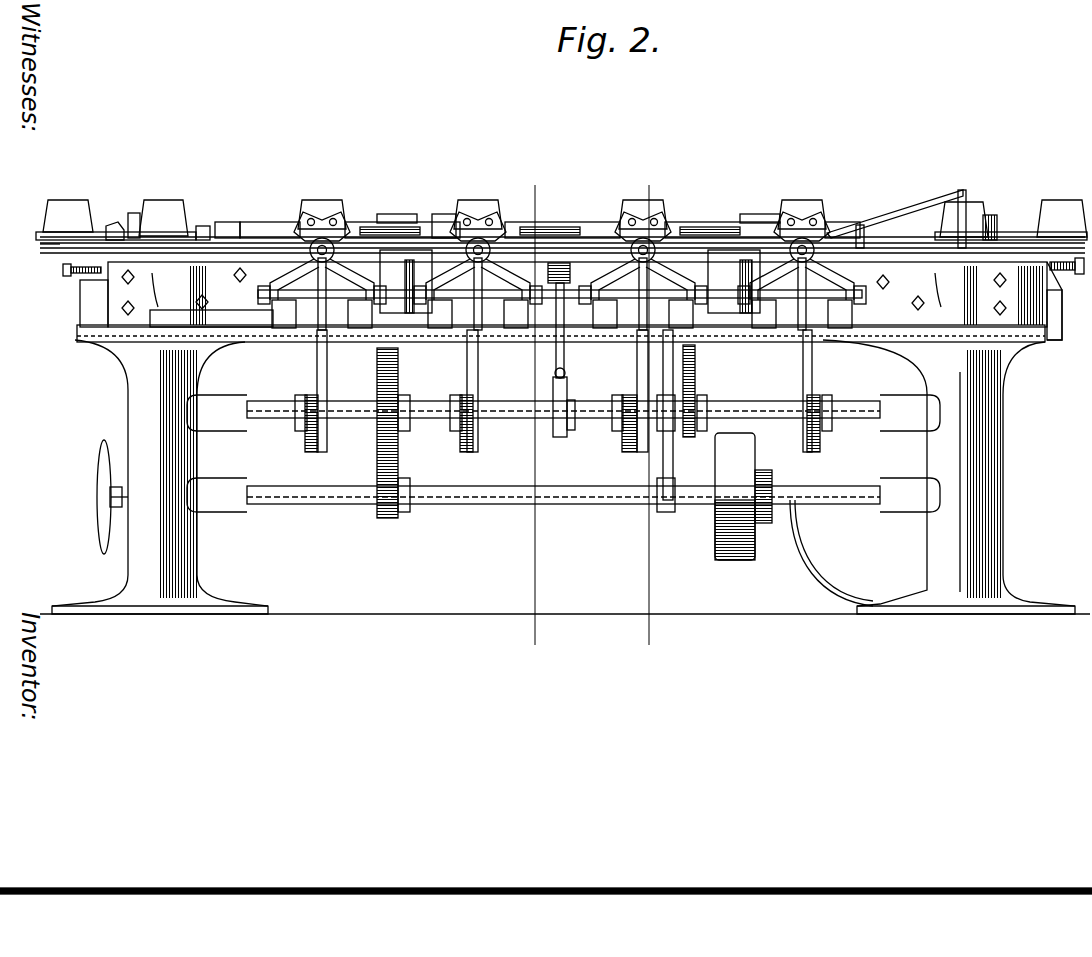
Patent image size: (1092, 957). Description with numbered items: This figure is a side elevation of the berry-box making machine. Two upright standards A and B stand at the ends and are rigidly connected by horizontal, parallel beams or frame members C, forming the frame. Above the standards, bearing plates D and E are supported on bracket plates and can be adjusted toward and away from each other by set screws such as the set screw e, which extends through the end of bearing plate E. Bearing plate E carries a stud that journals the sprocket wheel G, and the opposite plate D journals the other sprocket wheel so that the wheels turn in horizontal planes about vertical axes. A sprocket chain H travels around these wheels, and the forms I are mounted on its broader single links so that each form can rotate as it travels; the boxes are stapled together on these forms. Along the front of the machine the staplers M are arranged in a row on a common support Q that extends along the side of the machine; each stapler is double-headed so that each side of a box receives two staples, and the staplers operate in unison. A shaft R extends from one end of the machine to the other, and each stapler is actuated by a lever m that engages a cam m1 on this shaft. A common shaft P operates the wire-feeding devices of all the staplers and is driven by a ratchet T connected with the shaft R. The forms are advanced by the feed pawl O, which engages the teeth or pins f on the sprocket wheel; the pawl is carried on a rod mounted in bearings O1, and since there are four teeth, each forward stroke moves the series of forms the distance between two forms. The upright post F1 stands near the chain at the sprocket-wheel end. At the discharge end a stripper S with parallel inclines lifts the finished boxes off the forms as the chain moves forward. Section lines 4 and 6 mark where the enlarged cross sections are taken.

The standard A is at (183, 543).
The standard B is at (953, 548).
The beam C is at (577, 294).
The common support Q is at (232, 318).
The bearing plate D is at (100, 268).
The sprocket chain H is at (62, 247).
The form I is at (62, 210).
The post F1 is at (134, 213).
The teeth or pins f is at (113, 226).
The feed pawl O is at (224, 222).
The stapler M is at (319, 216).
The bearing O1 is at (385, 221).
The shaft P is at (393, 287).
The ratchet T is at (565, 268).
The stripper S is at (956, 195).
The sprocket wheel G is at (996, 212).
The bearing plate E is at (1000, 258).
The set screw e is at (1071, 266).
The shaft R is at (520, 418).
The lever m is at (322, 353).
The cam m1 is at (305, 372).
The section line 4- 4 is at (574, 184).
The section line 6- 6 is at (615, 184).